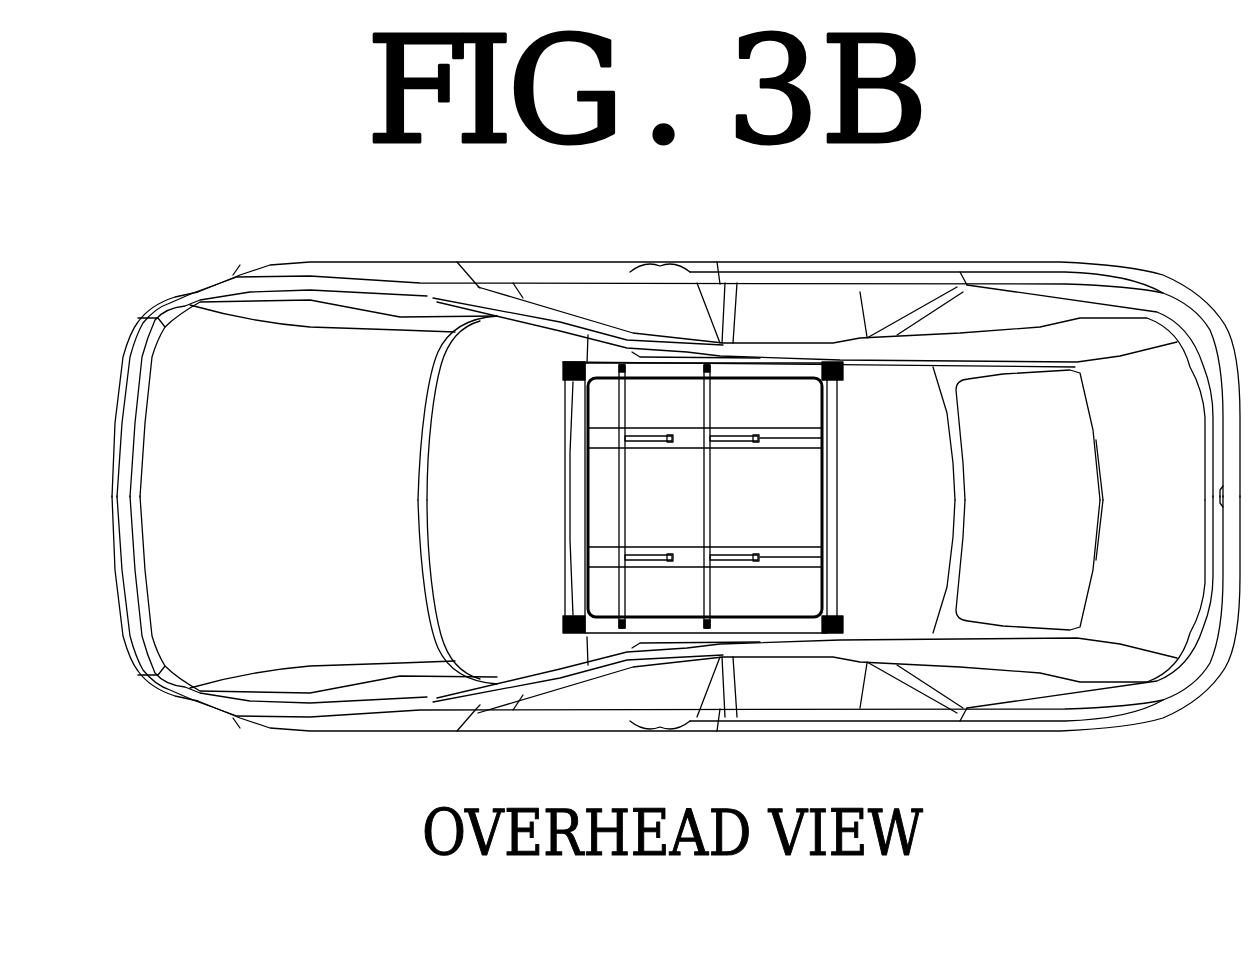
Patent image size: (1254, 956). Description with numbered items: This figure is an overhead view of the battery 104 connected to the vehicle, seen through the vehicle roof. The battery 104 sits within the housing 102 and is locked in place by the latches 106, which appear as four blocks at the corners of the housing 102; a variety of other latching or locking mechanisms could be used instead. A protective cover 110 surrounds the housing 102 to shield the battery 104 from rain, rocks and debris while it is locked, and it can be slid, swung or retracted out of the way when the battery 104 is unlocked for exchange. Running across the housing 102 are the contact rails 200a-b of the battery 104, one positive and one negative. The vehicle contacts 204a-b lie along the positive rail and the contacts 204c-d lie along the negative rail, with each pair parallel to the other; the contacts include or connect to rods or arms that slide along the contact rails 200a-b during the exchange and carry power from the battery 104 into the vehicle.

The housing 102 is at (820, 510).
The battery 104 is at (672, 490).
The latches 106 is at (562, 375).
The protective cover 110 is at (835, 463).
The contact rails 200a-b is at (783, 558).
The contacts 204a-b is at (755, 434).
The contacts 204c-d is at (756, 553).